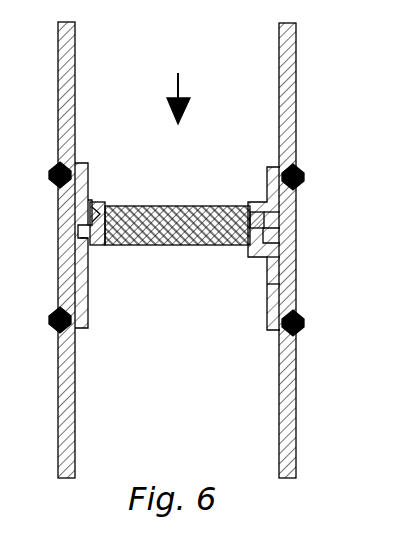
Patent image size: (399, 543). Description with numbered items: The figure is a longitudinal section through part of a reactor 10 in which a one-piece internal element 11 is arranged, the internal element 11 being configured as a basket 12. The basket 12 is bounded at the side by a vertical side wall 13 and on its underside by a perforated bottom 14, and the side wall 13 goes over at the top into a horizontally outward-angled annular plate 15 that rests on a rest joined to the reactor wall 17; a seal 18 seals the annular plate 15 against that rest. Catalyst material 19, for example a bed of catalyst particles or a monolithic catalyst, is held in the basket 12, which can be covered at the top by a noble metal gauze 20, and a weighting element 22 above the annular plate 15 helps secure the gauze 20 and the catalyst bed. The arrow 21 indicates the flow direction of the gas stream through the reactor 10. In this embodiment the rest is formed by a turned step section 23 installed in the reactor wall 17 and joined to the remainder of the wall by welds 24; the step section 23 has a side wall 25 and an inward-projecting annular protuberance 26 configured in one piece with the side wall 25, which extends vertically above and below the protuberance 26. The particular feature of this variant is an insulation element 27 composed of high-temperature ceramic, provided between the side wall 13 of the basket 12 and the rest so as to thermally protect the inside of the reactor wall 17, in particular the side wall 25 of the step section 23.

The reactor 10 is at (319, 125).
The one-piece internal element 11 is at (168, 283).
The basket 12 is at (132, 250).
The vertical side wall 13 is at (282, 222).
The perforated bottom 14 is at (192, 250).
The annular plate 15 is at (95, 210).
The reactor wall 17 is at (296, 48).
The seal 18 is at (263, 214).
The catalyst material 19 is at (141, 205).
The noble metal gauze 20 is at (215, 206).
The arrow 21 is at (181, 90).
The weighting element 22 is at (96, 207).
The step section 23 is at (80, 241).
The welds 24 is at (305, 170).
The side wall 25 is at (296, 263).
The annular protuberance 26 is at (276, 245).
The insulation element 27 is at (276, 284).